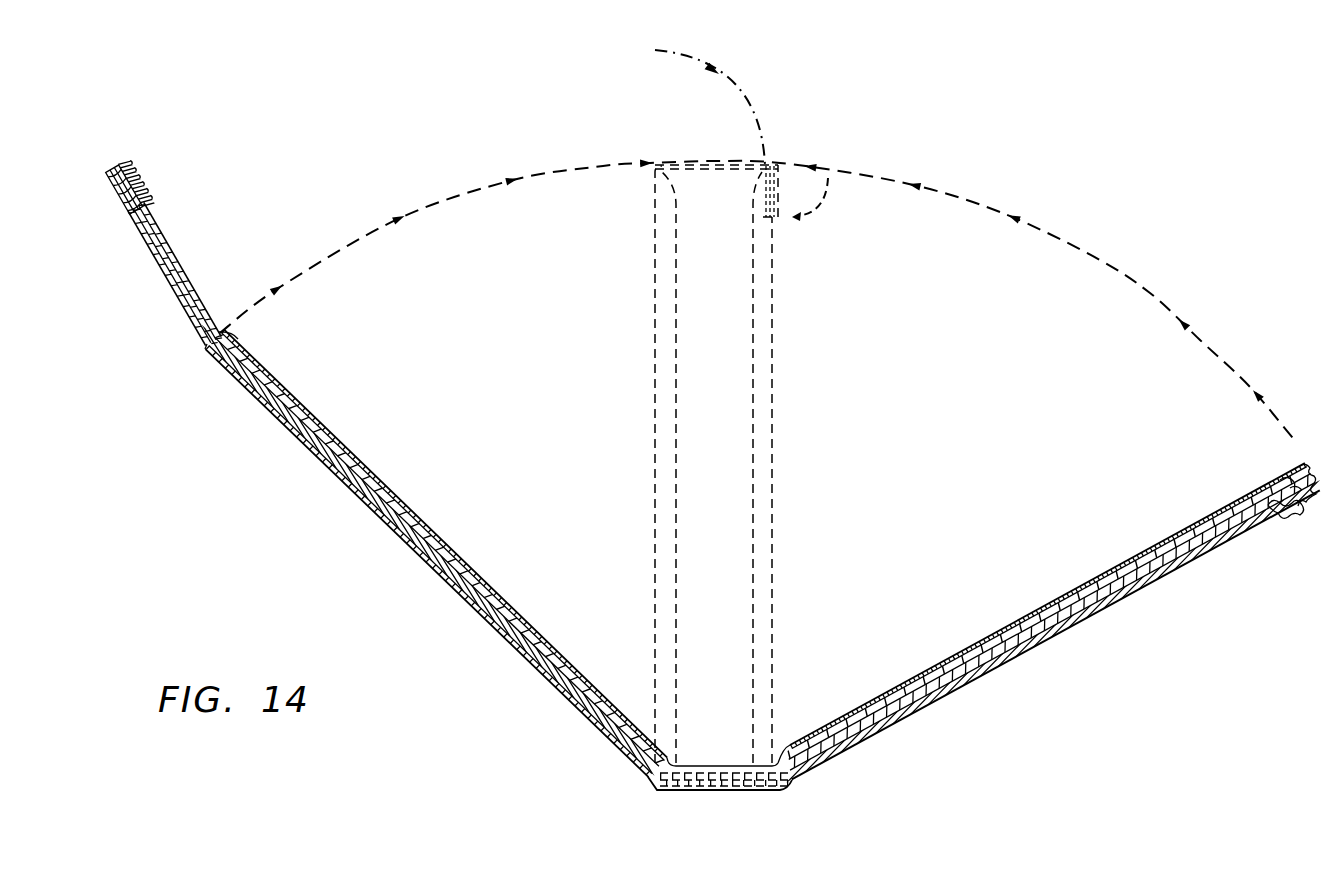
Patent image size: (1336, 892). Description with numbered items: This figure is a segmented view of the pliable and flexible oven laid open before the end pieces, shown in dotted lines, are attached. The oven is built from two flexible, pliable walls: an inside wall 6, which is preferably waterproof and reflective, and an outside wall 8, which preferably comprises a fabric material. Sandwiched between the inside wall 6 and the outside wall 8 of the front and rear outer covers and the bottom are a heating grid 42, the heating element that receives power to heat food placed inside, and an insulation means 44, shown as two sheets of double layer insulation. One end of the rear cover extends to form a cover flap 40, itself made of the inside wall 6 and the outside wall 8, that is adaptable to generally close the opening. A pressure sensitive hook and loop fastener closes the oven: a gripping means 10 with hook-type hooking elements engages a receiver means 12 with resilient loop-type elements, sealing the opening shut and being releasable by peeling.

The inside wall 6 is at (160, 223).
The outside wall 8 is at (118, 202).
The gripping means 10 is at (1297, 502).
The receiver means 12 is at (150, 200).
The cover flap 40 is at (143, 222).
The heating grid 42 is at (347, 455).
The insulation means 44 is at (370, 493).